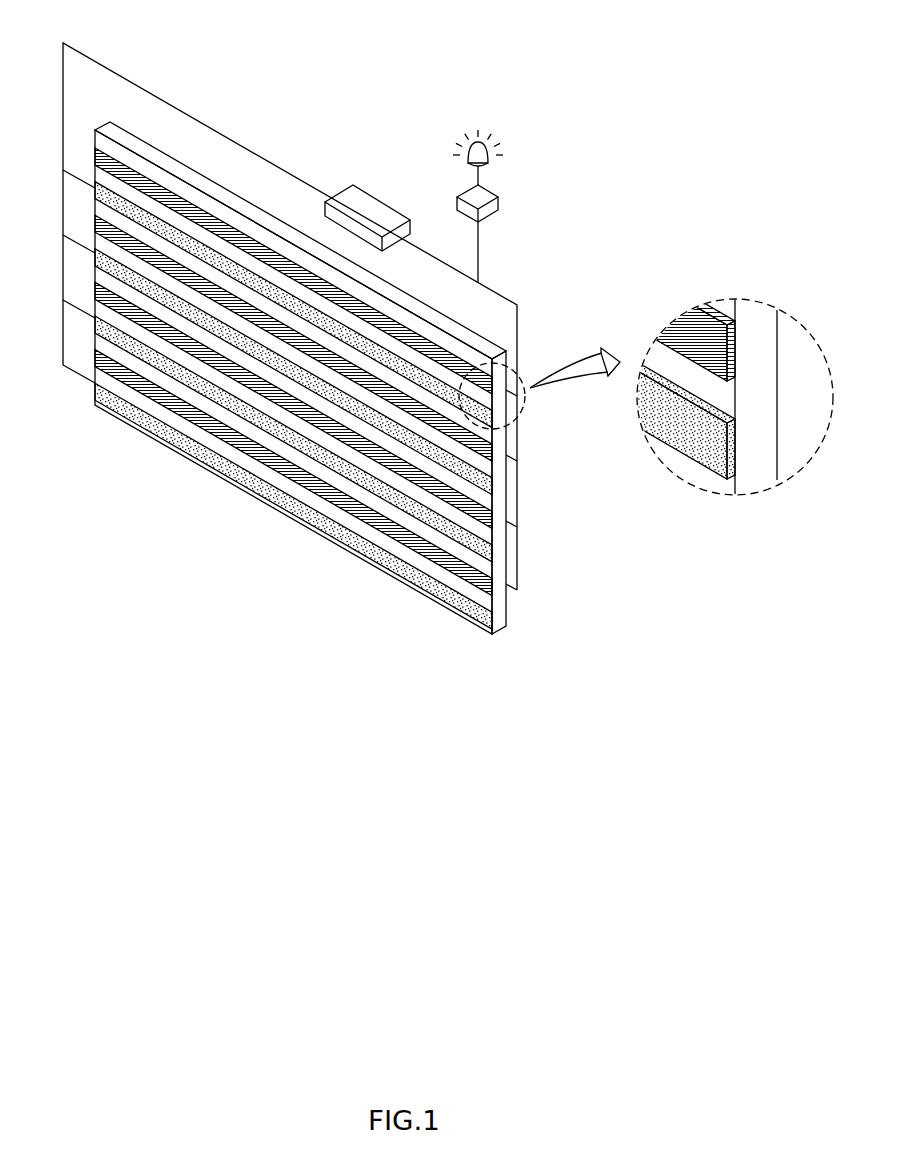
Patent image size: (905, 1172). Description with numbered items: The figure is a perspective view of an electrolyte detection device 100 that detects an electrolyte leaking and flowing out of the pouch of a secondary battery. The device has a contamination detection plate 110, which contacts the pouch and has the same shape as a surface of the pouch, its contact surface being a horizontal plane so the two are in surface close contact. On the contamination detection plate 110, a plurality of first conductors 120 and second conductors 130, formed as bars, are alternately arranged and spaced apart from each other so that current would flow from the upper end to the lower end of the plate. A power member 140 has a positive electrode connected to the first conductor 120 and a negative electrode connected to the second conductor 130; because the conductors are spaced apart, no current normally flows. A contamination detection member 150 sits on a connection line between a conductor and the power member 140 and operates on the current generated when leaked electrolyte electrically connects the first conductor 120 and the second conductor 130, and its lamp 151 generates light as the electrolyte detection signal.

The electrolyte detection device 100 is at (297, 143).
The contamination detection plate 110 is at (487, 348).
The first conductor 120 is at (488, 446).
The second conductor 130 is at (490, 478).
The power member 140 is at (367, 209).
The contamination detection member 150 is at (499, 199).
The lamp 151 is at (489, 160).